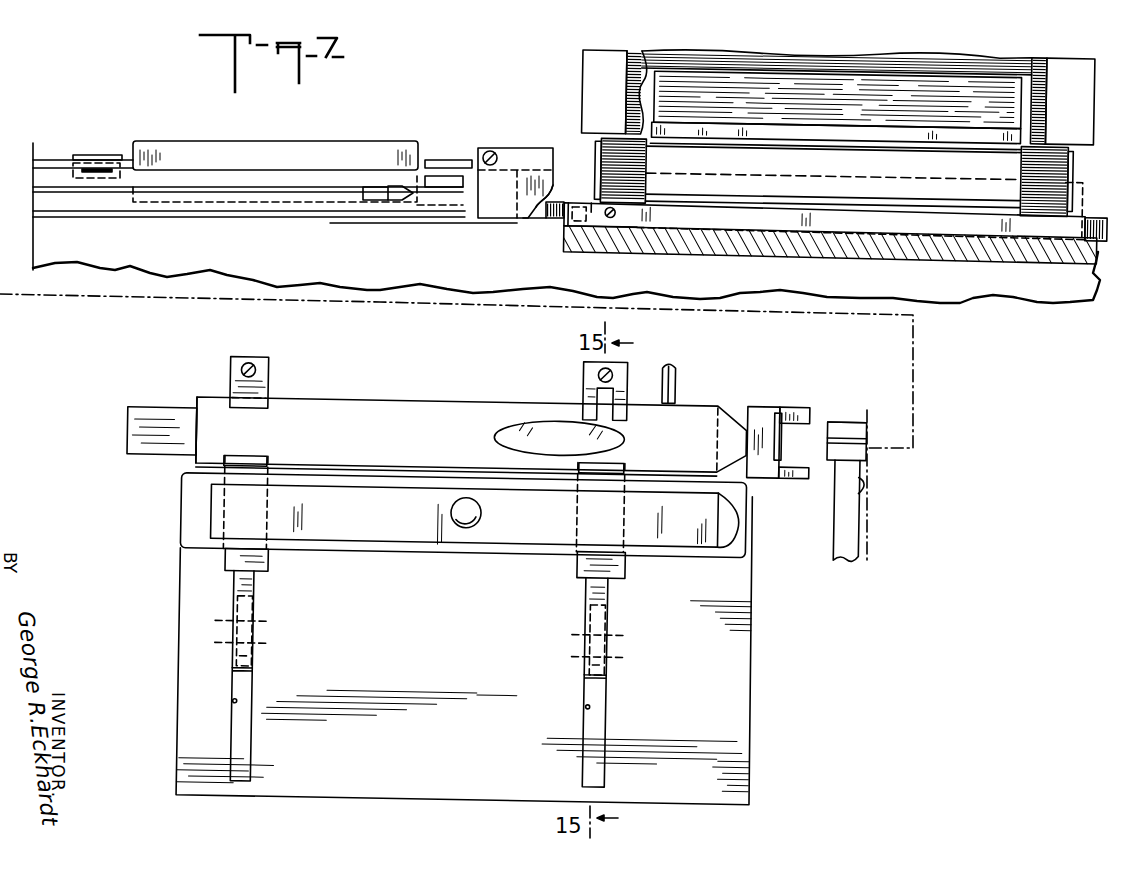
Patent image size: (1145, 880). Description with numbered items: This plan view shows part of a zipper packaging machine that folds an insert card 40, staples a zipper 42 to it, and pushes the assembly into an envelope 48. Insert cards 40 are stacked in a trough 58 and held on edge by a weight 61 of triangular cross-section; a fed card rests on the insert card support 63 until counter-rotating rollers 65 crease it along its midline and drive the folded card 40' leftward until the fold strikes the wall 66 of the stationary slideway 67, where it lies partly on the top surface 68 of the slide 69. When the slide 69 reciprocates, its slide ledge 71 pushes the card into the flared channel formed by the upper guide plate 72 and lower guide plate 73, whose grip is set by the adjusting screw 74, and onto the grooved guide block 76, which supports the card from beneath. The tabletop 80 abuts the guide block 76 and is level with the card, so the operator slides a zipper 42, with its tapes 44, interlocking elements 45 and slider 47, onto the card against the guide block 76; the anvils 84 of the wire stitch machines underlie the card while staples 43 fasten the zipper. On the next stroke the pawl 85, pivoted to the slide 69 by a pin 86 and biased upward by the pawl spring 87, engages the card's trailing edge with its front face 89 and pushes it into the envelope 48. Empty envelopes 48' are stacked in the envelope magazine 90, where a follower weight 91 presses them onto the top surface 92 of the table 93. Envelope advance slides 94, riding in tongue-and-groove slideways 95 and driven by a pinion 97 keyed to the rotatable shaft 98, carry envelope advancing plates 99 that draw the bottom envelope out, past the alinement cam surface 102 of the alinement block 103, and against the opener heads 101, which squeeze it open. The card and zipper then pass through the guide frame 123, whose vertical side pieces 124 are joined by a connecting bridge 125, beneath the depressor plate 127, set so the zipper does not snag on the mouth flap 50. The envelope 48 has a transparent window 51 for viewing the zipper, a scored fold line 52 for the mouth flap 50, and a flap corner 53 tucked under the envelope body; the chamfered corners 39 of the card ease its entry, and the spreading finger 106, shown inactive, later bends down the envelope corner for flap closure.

The chamfered corner 39 is at (837, 411).
The insert card 40 is at (844, 84).
The folded insert card 40' is at (882, 190).
The zipper 42 is at (104, 217).
The staple 43 is at (98, 168).
The tape 44 is at (192, 168).
The interlocking elements 45 is at (229, 191).
The slider 47 is at (395, 197).
The envelope 48 is at (472, 421).
The empty envelope 48' is at (342, 567).
The mouth flap 50 is at (722, 423).
The window 51 is at (568, 444).
The fold line 52 is at (717, 428).
The corner of mouth flap 53 is at (737, 459).
The trough 58 is at (1083, 93).
The weight 61 is at (838, 99).
The insert card support 63 is at (950, 121).
The counter-rotating rollers 65 is at (853, 152).
The wall 66 is at (768, 224).
The stationary slideway 67 is at (918, 254).
The top surface 68 is at (882, 222).
The slide 69 is at (817, 230).
The slide ledge 71 is at (1090, 212).
The upper guide plate 72 is at (535, 148).
The lower guide plate 73 is at (553, 197).
The adjusting screw 74 is at (493, 155).
The grooved guide block 76 is at (217, 134).
The tabletop 80 is at (1048, 280).
The anvil 84 is at (88, 153).
The pawl 85 is at (558, 220).
The pin 86 is at (577, 243).
The pawl spring 87 is at (615, 220).
The front face 89 is at (546, 217).
The envelope magazine 90 is at (750, 546).
The follower weight 91 is at (360, 522).
The top surface 92 is at (462, 619).
The table 93 is at (755, 628).
The envelope advance slide 94 is at (257, 593).
The tongue-and-groove slideway 95 is at (239, 703).
The pinion 97 is at (241, 600).
The rotatable shaft 98 is at (216, 643).
The envelope advancing plate 99 is at (268, 560).
The opener head 101 is at (268, 379).
The alinement cam surface 102 is at (197, 440).
The alinement block 103 is at (160, 408).
The spreading finger 106 is at (675, 371).
The guide frame 123 is at (775, 478).
The vertical side piece 124 is at (813, 412).
The connecting bridge 125 is at (780, 450).
The depressor plate 127 is at (757, 412).